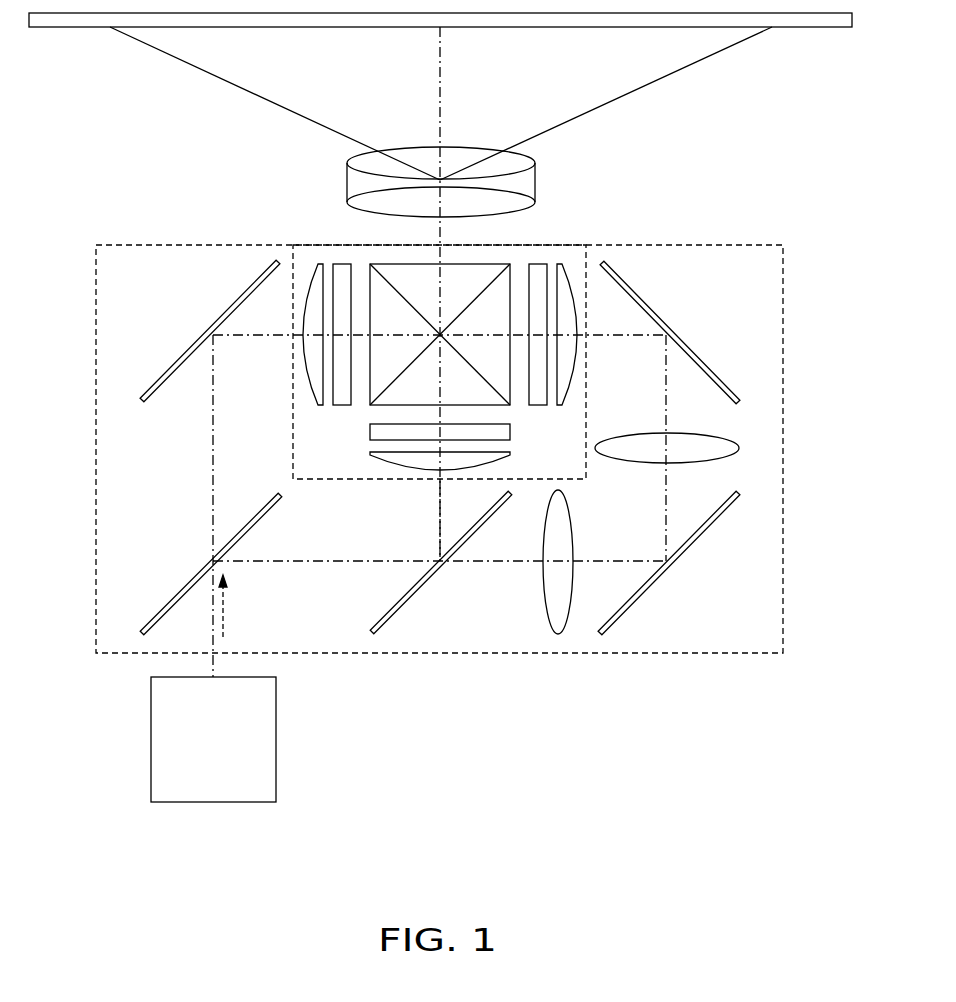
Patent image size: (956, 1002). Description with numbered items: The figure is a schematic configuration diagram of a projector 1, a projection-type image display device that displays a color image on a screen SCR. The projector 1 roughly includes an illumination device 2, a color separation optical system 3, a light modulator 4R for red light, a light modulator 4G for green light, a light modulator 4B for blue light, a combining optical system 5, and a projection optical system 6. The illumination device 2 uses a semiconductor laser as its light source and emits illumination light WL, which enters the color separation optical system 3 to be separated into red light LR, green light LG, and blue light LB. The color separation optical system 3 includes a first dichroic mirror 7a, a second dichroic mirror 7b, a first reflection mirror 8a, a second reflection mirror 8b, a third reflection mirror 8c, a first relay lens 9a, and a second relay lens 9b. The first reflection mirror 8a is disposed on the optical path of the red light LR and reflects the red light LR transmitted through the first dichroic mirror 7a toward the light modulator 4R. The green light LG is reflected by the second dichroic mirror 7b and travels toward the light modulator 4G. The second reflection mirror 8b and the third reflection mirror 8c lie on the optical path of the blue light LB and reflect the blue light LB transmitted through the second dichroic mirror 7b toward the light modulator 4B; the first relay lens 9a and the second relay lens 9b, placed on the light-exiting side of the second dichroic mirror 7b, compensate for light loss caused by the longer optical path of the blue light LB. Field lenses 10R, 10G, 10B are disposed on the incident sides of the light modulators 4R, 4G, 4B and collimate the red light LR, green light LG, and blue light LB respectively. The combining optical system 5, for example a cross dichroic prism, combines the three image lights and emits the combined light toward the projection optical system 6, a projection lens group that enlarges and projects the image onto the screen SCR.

The projector 1 is at (791, 219).
The illumination device 2 is at (276, 735).
The color separation optical system 3 is at (96, 392).
The light modulator for red light 4R is at (342, 263).
The light modulator for green light 4G is at (377, 433).
The light modulator for blue light 4B is at (538, 263).
The combining optical system 5 is at (462, 275).
The projection optical system 6 is at (420, 158).
The first dichroic mirror 7a is at (175, 595).
The second dichroic mirror 7b is at (420, 593).
The first reflection mirror 8a is at (187, 350).
The second reflection mirror 8b is at (693, 548).
The third reflection mirror 8c is at (695, 350).
The first relay lens 9a is at (543, 583).
The second relay lens 9b is at (727, 440).
The field lens 10R is at (315, 262).
The field lens 10G is at (377, 457).
The field lens 10B is at (565, 262).
The screen SCR is at (815, 27).
The illumination light WL is at (225, 615).
The red light LR is at (213, 468).
The green light LG is at (440, 518).
The blue light LB is at (665, 507).